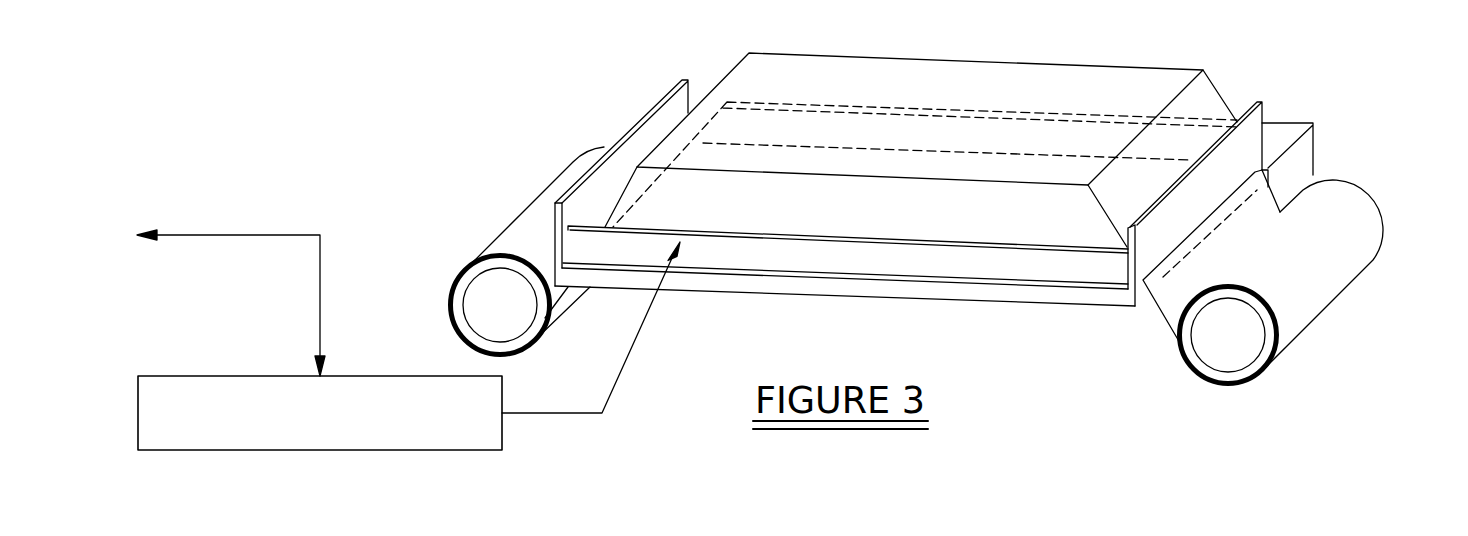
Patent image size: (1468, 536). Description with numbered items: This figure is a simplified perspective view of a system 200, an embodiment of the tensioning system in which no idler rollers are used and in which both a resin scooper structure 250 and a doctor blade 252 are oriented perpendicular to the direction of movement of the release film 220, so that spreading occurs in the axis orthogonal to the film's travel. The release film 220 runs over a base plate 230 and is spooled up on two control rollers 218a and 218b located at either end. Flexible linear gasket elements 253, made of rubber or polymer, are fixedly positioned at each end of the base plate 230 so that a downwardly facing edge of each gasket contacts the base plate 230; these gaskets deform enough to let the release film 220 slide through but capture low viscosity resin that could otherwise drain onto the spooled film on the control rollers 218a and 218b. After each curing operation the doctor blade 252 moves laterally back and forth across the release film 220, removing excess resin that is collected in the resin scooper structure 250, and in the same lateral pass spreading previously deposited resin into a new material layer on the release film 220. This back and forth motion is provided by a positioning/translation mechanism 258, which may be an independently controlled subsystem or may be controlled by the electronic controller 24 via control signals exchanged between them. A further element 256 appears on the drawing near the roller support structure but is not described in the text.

The system 200 is at (1330, 62).
The release film 220 is at (1002, 75).
The base plate 230 is at (953, 297).
The doctor blade 252 is at (590, 245).
The flexible linear gasket elements 253 is at (657, 120).
The resin scooper structure 250 is at (1307, 157).
The support arm 256 is at (1200, 224).
The control roller 218a is at (487, 308).
The control roller 218b is at (1238, 342).
The positioning/translation mechanism 258 is at (237, 376).
The electronic controller 24 is at (257, 167).